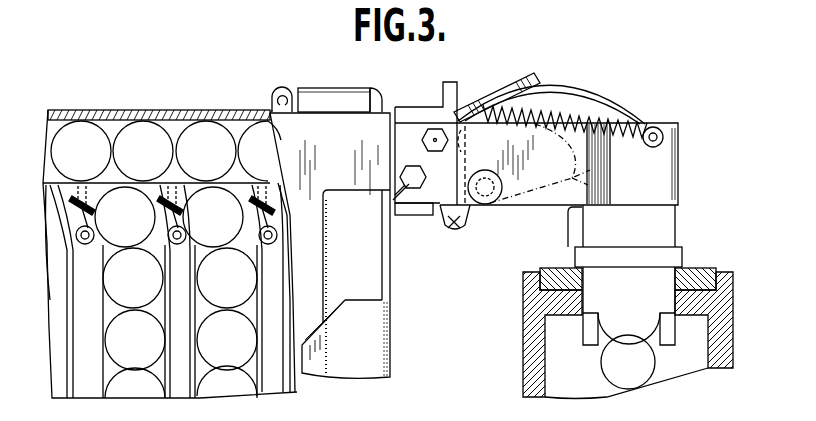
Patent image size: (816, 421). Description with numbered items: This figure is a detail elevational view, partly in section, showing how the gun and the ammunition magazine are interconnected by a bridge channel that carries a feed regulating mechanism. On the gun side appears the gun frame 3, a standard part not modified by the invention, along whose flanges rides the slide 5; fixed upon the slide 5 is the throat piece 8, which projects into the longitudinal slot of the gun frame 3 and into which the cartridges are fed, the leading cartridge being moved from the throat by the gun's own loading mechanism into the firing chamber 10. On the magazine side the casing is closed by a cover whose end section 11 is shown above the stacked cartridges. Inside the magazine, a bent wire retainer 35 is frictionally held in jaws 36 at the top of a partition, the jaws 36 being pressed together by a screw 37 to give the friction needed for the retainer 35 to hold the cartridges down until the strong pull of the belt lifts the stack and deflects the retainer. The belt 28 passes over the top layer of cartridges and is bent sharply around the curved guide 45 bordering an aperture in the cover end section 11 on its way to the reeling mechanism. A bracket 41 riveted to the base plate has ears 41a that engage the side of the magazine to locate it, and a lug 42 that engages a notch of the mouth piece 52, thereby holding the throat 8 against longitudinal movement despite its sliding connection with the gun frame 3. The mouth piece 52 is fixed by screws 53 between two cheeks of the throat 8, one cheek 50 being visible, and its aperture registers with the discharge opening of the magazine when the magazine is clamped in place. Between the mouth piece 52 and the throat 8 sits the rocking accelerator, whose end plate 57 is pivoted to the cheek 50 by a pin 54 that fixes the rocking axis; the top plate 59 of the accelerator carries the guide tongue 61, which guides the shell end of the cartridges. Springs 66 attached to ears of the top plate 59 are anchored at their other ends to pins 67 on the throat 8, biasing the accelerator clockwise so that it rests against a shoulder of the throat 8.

The gun frame 3 is at (725, 325).
The slide 5 is at (556, 272).
The throat piece 8 is at (667, 221).
The firing chamber 10 is at (604, 376).
The end section of cover plate 11 is at (135, 112).
The belt 28 is at (88, 111).
The bent wire retainer 35 is at (95, 212).
The jaws 36 is at (49, 212).
The screw 37 is at (70, 182).
The bracket 41 is at (392, 278).
The ears 41a is at (352, 313).
The lug 42 is at (395, 190).
The curved guide 45 is at (284, 96).
The cheek 50 is at (538, 200).
The mouth piece 52 is at (421, 108).
The screws 53 is at (400, 196).
The pins 54 is at (485, 195).
The end plate 57 is at (452, 222).
The top plate 59 is at (500, 95).
The guide tongue 61 is at (622, 106).
The springs 66 is at (565, 120).
The pins 67 is at (658, 132).